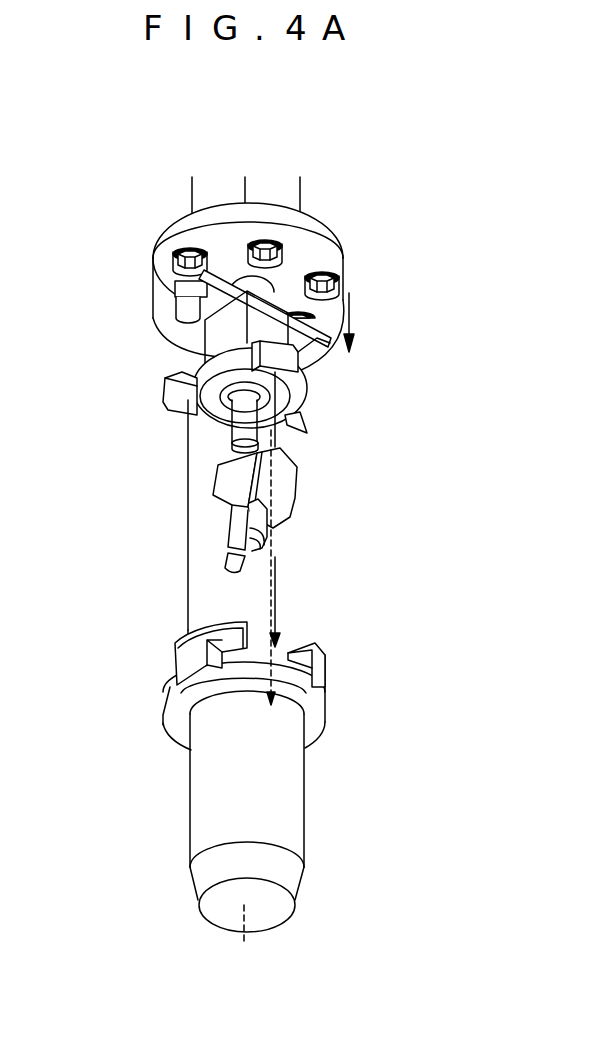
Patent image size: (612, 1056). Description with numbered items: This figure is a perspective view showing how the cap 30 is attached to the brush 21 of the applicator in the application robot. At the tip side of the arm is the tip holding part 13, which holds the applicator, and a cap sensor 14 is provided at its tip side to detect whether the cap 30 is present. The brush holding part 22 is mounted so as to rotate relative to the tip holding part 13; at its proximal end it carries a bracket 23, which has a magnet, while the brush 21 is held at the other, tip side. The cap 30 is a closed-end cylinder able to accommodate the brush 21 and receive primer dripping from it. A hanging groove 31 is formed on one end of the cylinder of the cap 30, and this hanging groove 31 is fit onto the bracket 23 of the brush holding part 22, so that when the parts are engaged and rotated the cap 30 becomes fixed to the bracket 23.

The tip holding part 13 is at (263, 291).
The cap sensor 14 is at (187, 303).
The brush 21 is at (225, 556).
The brush holding part 22 is at (232, 447).
The bracket 23 is at (170, 397).
The cap 30 is at (332, 815).
The hanging groove 31 is at (172, 697).